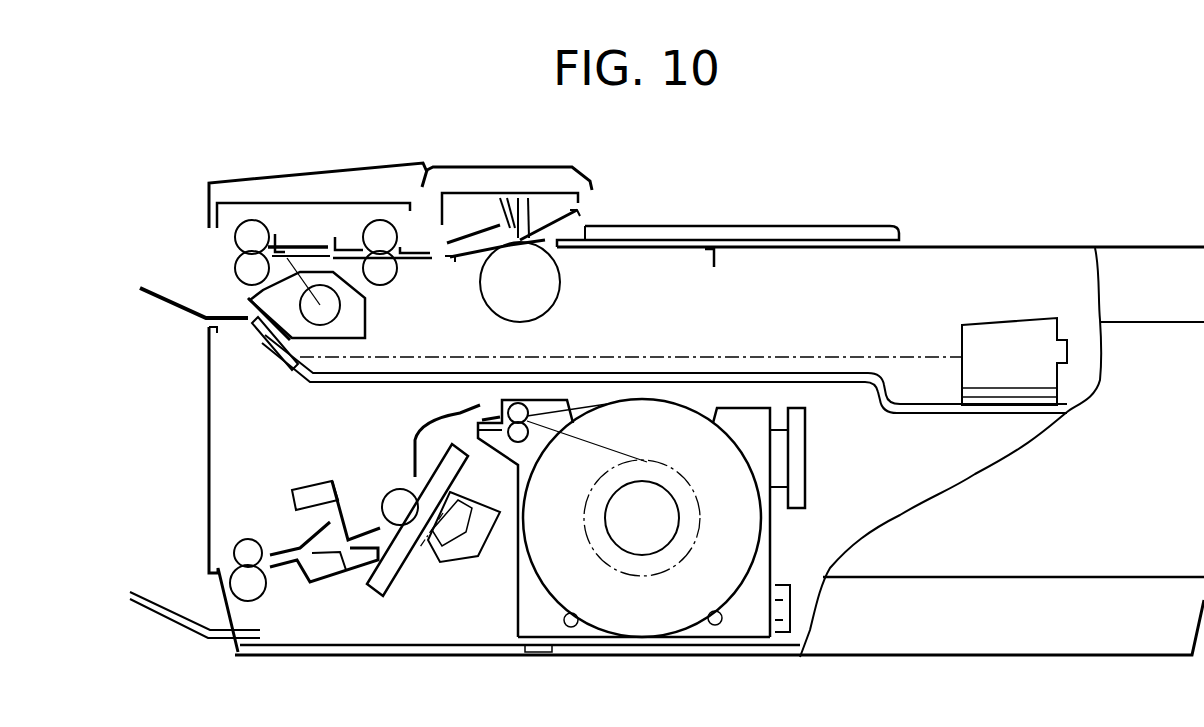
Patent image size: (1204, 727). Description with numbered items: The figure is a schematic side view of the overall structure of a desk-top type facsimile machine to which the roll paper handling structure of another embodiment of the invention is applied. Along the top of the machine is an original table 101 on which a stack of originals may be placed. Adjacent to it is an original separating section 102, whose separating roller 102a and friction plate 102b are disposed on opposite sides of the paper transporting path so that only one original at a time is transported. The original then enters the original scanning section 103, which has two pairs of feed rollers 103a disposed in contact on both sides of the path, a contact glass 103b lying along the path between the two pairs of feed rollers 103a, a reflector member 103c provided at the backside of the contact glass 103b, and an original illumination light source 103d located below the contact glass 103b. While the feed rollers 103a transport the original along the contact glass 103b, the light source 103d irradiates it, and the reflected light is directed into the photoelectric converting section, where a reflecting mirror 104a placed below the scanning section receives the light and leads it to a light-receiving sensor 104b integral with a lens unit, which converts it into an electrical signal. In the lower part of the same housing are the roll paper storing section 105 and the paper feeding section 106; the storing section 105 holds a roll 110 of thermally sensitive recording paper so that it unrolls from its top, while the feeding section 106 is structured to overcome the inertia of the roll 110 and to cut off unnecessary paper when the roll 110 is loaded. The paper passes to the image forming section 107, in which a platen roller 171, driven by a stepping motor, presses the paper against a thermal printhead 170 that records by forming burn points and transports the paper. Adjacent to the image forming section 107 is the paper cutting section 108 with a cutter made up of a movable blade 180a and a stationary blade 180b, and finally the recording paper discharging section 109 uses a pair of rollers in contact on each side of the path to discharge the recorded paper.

The original table 101 is at (857, 220).
The original separating section 102 is at (530, 190).
The separating roller 102a is at (548, 283).
The friction plate 102b is at (500, 231).
The original scanning section 103 is at (332, 217).
The feed rollers 103a is at (232, 246).
The contact glass 103b is at (305, 253).
The reflector member 103c is at (273, 233).
The original illumination light source 103d is at (340, 312).
The reflecting mirror 104a is at (287, 353).
The light-receiving sensor 104b is at (1000, 327).
The roll paper storing section 105 is at (670, 388).
The paper feeding section 106 is at (517, 398).
The image forming section 107 is at (402, 478).
The paper cutting section 108 is at (302, 538).
The recording paper discharging section 109 is at (230, 545).
The roll of paper 110 is at (617, 413).
The thermal printhead 170 is at (377, 590).
The platen roller 171 is at (393, 495).
The movable blade 180a is at (327, 563).
The stationary blade 180b is at (333, 510).